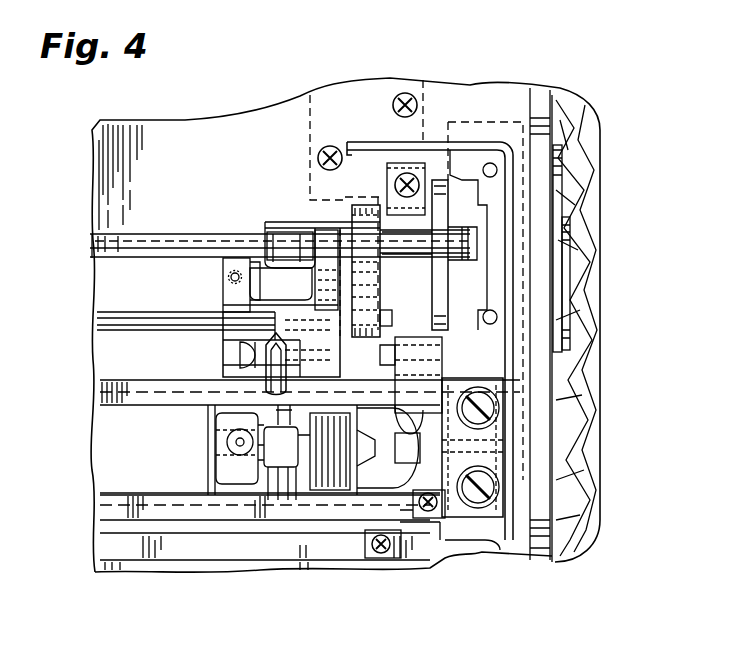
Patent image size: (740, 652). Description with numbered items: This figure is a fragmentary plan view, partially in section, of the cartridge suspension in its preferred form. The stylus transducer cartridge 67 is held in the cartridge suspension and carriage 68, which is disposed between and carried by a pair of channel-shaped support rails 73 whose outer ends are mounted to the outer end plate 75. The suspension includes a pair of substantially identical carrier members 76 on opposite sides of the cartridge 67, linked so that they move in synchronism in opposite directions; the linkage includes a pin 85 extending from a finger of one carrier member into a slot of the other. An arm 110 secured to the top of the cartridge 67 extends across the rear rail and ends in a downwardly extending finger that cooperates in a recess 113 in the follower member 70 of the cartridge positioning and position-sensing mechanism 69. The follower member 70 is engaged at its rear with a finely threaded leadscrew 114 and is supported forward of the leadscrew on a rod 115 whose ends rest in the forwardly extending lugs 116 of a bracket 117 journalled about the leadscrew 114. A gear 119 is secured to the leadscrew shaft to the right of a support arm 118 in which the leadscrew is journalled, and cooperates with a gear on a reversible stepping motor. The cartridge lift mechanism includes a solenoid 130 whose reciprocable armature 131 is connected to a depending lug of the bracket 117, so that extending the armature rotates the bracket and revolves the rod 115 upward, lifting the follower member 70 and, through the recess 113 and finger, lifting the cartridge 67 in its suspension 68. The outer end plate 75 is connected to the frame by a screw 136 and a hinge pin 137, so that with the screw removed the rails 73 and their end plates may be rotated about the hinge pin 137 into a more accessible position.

The cartridge positioning and position-sensing mechanism 69 is at (212, 213).
The solenoid 130 is at (308, 118).
The support arm 118 is at (400, 203).
The reciprocable armature 131 is at (345, 212).
The bracket 117 is at (276, 219).
The leadscrew 114 is at (160, 210).
The gear 119 is at (445, 210).
The follower member 70 is at (222, 284).
The forwardly extending lugs 116 is at (381, 288).
The rod 115 is at (118, 330).
The recess 113 is at (222, 331).
The arm 110 is at (268, 390).
The pin 85 is at (302, 425).
The support rails 73 is at (101, 412).
The cartridge suspension and carriage 68 is at (184, 452).
The carrier members 76 is at (208, 473).
The hinge pin 137 is at (506, 392).
The screw 136 is at (433, 512).
The stylus transducer cartridge 67 is at (247, 488).
The outer end plate 75 is at (388, 500).